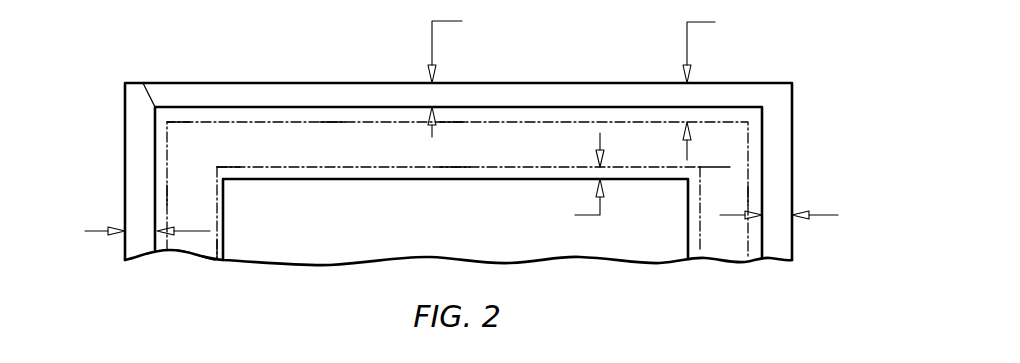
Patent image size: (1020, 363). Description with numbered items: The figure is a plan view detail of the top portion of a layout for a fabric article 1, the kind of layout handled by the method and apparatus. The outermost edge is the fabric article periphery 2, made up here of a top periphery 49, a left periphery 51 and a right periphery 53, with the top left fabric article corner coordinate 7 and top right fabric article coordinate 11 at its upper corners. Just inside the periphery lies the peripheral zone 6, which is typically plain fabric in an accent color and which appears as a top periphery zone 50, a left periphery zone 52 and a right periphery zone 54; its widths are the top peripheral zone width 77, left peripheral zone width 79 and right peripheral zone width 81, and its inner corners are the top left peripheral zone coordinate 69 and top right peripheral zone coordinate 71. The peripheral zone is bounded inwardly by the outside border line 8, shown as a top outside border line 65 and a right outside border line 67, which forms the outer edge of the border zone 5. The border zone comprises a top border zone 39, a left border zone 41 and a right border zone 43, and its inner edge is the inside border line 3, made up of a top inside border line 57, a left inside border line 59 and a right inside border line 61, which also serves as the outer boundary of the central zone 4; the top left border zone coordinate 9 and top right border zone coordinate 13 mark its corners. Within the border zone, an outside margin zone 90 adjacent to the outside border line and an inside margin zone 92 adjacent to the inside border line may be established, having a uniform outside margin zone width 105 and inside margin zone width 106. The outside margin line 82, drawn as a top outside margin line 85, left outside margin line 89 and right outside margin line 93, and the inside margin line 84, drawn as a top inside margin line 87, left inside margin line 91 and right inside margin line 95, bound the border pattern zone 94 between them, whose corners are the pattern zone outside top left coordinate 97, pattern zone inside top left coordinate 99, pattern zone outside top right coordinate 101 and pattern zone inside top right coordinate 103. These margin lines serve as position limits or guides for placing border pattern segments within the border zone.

The fabric article 1 is at (775, 83).
The fabric article periphery 2 is at (793, 98).
The inside border line 3 is at (285, 180).
The central zone 4 is at (478, 243).
The border zone 5 is at (280, 128).
The peripheral zone 6 is at (620, 97).
The top left fabric article corner coordinate 7 is at (125, 83).
The outside border line 8 is at (423, 107).
The top left border zone coordinate 9 is at (224, 180).
The top right fabric article coordinate 11 is at (792, 83).
The top right border zone coordinate 13 is at (685, 182).
The top border zone 39 is at (449, 143).
The left border zone 41 is at (208, 250).
The right border zone 43 is at (720, 202).
The top periphery 49 is at (218, 83).
The top periphery zone 50 is at (530, 83).
The left periphery 51 is at (125, 157).
The left periphery zone 52 is at (137, 248).
The right periphery 53 is at (793, 173).
The right periphery zone 54 is at (775, 240).
The top inside border line 57 is at (333, 180).
The left inside border line 59 is at (224, 228).
The right inside border line 61 is at (687, 245).
The top outside border line 65 is at (570, 107).
The right outside border line 67 is at (322, 92).
The top left peripheral zone coordinate 69 is at (155, 107).
The top right peripheral zone coordinate 71 is at (762, 107).
The top peripheral zone width 77 is at (459, 73).
The left peripheral zone width 79 is at (132, 232).
The right peripheral zone width 81 is at (793, 216).
The outside margin line 82 is at (450, 122).
The inside margin line 84 is at (243, 167).
The top outside margin line 85 is at (330, 123).
The top inside margin line 87 is at (527, 167).
The left outside margin line 89 is at (164, 199).
The outside margin zone 90 is at (492, 97).
The left inside margin line 91 is at (207, 243).
The inside margin zone 92 is at (390, 180).
The right outside margin line 93 is at (748, 199).
The border pattern zone 94 is at (385, 140).
The right inside margin line 95 is at (720, 235).
The pattern zone outside top left coordinate 97 is at (168, 123).
The pattern zone inside top left coordinate 99 is at (217, 167).
The pattern zone outside top right coordinate 101 is at (748, 123).
The pattern zone inside top right coordinate 103 is at (700, 167).
The outside margin zone width 105 is at (721, 46).
The inside margin zone width 106 is at (569, 203).